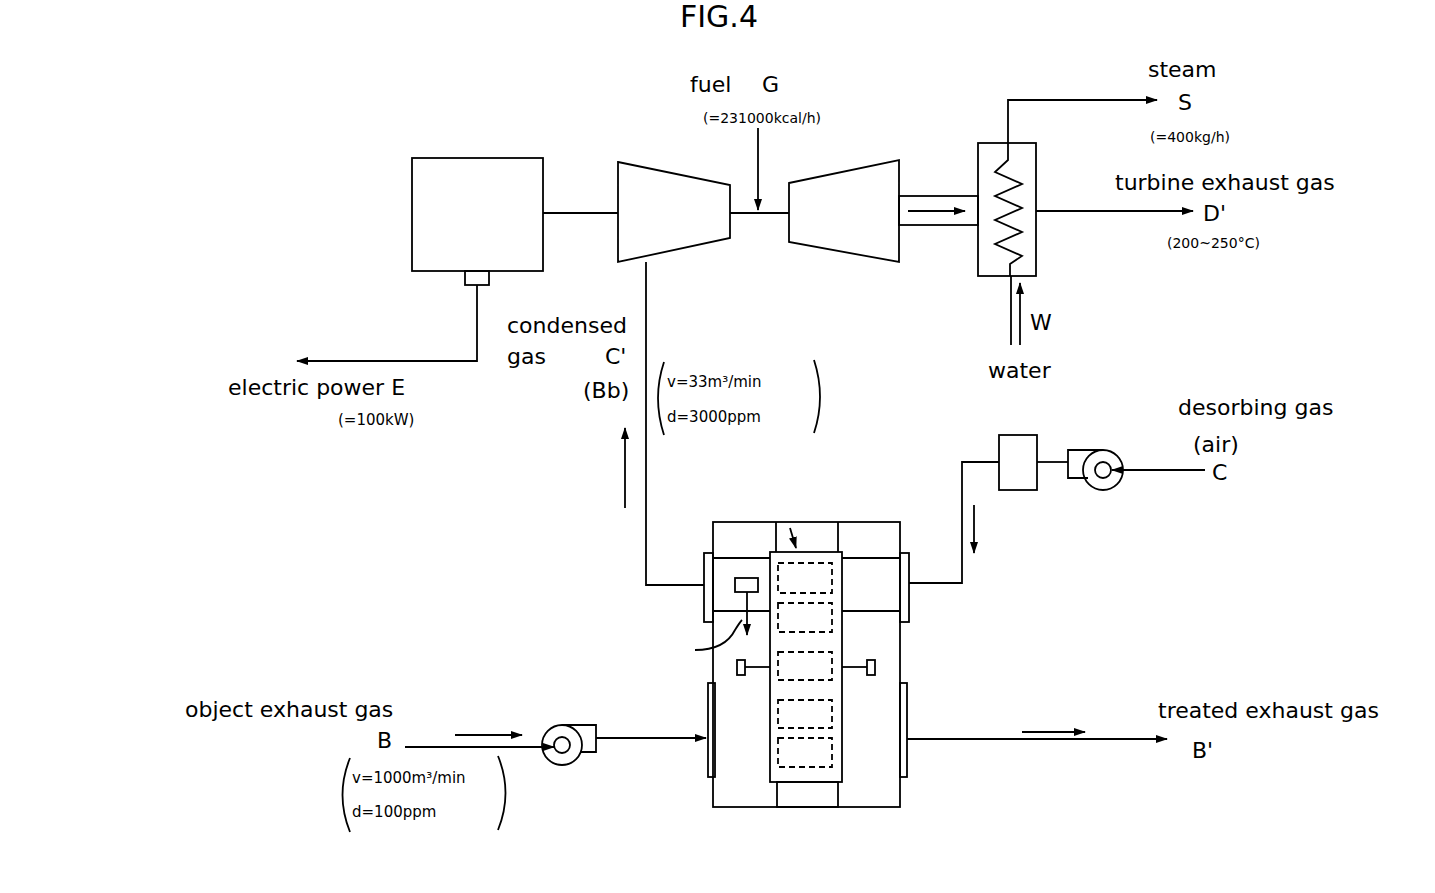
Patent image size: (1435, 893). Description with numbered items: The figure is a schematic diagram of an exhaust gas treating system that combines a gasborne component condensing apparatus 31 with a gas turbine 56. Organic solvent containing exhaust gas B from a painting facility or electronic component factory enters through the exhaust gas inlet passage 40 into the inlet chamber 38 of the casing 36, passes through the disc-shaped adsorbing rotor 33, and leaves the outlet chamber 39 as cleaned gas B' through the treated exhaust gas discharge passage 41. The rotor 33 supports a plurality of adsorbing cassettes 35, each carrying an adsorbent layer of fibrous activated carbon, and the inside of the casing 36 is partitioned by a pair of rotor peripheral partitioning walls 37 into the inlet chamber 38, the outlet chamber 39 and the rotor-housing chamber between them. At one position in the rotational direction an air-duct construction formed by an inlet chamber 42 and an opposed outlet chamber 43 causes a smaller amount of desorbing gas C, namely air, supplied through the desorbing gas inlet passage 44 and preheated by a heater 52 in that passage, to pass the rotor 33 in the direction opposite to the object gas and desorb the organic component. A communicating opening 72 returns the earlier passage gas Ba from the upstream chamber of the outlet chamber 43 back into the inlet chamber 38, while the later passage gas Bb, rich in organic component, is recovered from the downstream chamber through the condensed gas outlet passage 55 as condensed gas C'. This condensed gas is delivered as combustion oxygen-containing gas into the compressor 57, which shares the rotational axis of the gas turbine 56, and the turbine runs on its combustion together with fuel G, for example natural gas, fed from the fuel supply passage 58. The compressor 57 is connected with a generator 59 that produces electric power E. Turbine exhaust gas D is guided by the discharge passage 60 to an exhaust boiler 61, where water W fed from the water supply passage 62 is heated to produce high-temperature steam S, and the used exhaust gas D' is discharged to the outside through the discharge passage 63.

The condensing apparatus 31 is at (1055, 611).
The adsorbing rotor 33 is at (790, 527).
The adsorbing cassettes 35 is at (805, 565).
The casing 36 is at (873, 520).
The rotor peripheral partitioning walls 37 is at (777, 790).
The inlet chamber 38 is at (742, 733).
The outlet chamber 39 is at (867, 720).
The exhaust gas inlet passage 40 is at (626, 738).
The treated exhaust gas discharge passage 41 is at (1070, 739).
The desorbing gas inlet chamber 42 is at (870, 556).
The desorbing gas outlet chamber 43 is at (735, 556).
The desorbing gas inlet passage 44 is at (938, 588).
The heater 52 is at (1017, 490).
The condensed gas outlet passage 55 is at (646, 535).
The gas turbine 56 is at (843, 257).
The compressor 57 is at (687, 250).
The fuel supply passage 58 is at (752, 170).
The generator 59 is at (478, 158).
The discharge passage 60 is at (937, 227).
The exhaust boiler 61 is at (1037, 247).
The water supply passage 62 is at (1010, 312).
The discharge passage 63 is at (1050, 208).
The communicating opening 72 is at (735, 593).